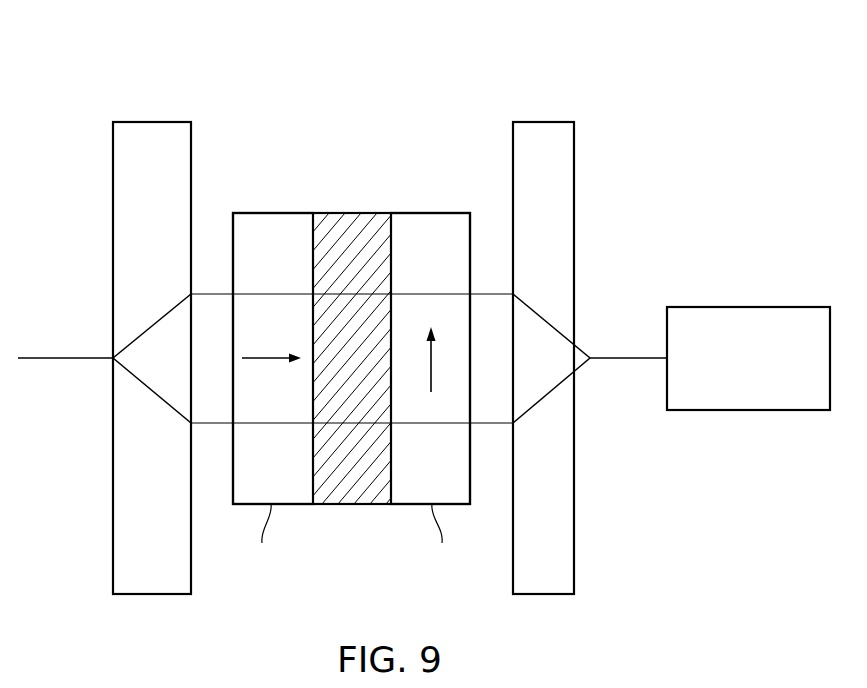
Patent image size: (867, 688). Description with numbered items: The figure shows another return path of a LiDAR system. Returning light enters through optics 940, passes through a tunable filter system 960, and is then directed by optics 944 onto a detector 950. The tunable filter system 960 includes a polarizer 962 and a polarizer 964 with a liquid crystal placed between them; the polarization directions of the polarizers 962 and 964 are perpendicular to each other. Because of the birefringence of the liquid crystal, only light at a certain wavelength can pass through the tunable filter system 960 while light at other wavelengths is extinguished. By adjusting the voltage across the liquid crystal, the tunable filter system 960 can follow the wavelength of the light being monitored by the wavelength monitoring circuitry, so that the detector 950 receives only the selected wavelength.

The optics 940 is at (152, 122).
The optics 944 is at (542, 122).
The detector 950 is at (747, 307).
The tunable filter system 960 is at (470, 122).
The polarizer 962 is at (270, 213).
The polarizer 964 is at (433, 213).